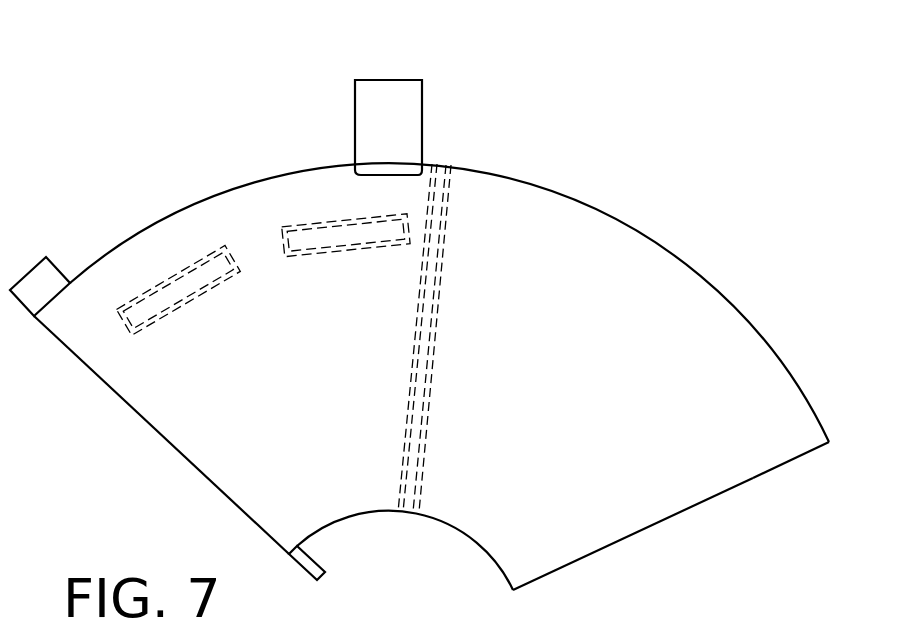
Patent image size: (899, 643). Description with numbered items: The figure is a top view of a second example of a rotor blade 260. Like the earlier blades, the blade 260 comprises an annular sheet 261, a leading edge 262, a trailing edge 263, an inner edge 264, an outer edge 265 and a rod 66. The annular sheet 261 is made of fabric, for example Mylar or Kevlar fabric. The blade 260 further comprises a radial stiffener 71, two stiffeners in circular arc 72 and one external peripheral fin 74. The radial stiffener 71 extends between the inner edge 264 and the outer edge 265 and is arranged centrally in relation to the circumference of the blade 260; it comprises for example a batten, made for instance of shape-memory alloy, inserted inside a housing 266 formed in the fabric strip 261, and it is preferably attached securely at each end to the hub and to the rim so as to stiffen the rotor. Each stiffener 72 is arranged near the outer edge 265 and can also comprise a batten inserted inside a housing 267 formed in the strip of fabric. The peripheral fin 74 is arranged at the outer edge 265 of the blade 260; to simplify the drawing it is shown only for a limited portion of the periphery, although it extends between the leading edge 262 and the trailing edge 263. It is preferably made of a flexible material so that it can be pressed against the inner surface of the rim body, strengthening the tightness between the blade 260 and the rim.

The blade 260 is at (445, 370).
The annular sheet 261 is at (785, 407).
The leading edge 262 is at (137, 417).
The trailing edge 263 is at (595, 552).
The inner edge 264 is at (488, 560).
The outer edge 265 is at (765, 338).
The housing 266 is at (443, 245).
The housing 267 is at (330, 217).
The rod 66 is at (48, 275).
The radial stiffener 71 is at (447, 167).
The stiffener in circular arc 72 is at (357, 227).
The external peripheral fin 74 is at (393, 90).